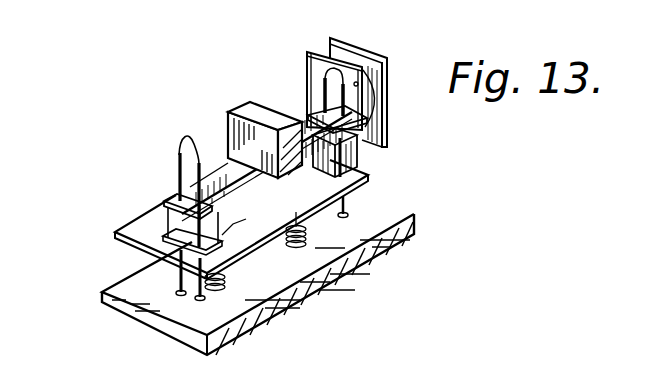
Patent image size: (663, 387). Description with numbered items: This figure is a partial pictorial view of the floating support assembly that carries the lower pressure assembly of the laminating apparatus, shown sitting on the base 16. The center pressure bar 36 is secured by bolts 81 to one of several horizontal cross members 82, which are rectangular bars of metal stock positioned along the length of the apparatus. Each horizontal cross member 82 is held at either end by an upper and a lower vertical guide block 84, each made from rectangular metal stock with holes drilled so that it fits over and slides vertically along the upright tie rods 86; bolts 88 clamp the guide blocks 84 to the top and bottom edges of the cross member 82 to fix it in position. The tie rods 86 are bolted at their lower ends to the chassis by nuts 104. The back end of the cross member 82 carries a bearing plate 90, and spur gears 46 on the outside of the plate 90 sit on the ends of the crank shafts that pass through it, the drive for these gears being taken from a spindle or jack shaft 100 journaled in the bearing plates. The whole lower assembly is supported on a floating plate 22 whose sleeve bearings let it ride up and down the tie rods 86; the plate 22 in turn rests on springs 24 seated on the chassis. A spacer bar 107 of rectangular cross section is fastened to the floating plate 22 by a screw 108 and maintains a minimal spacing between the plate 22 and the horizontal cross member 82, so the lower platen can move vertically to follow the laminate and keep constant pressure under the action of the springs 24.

The base 16 is at (102, 291).
The floating plate 22 is at (145, 228).
The springs 24 is at (288, 247).
The center pressure bar 36 is at (250, 115).
The spur gears 46 is at (366, 118).
The bolts 81 is at (266, 176).
The horizontal cross members 82 is at (356, 165).
The vertical guide block 84 is at (172, 198).
The tie rods 86 is at (185, 146).
The bolts 88 is at (178, 176).
The bearing plate 90 is at (355, 92).
The spindle or jack shaft 100 is at (180, 262).
The nuts 104 is at (198, 292).
The spacer bar 107 is at (236, 226).
The screw 108 is at (233, 276).